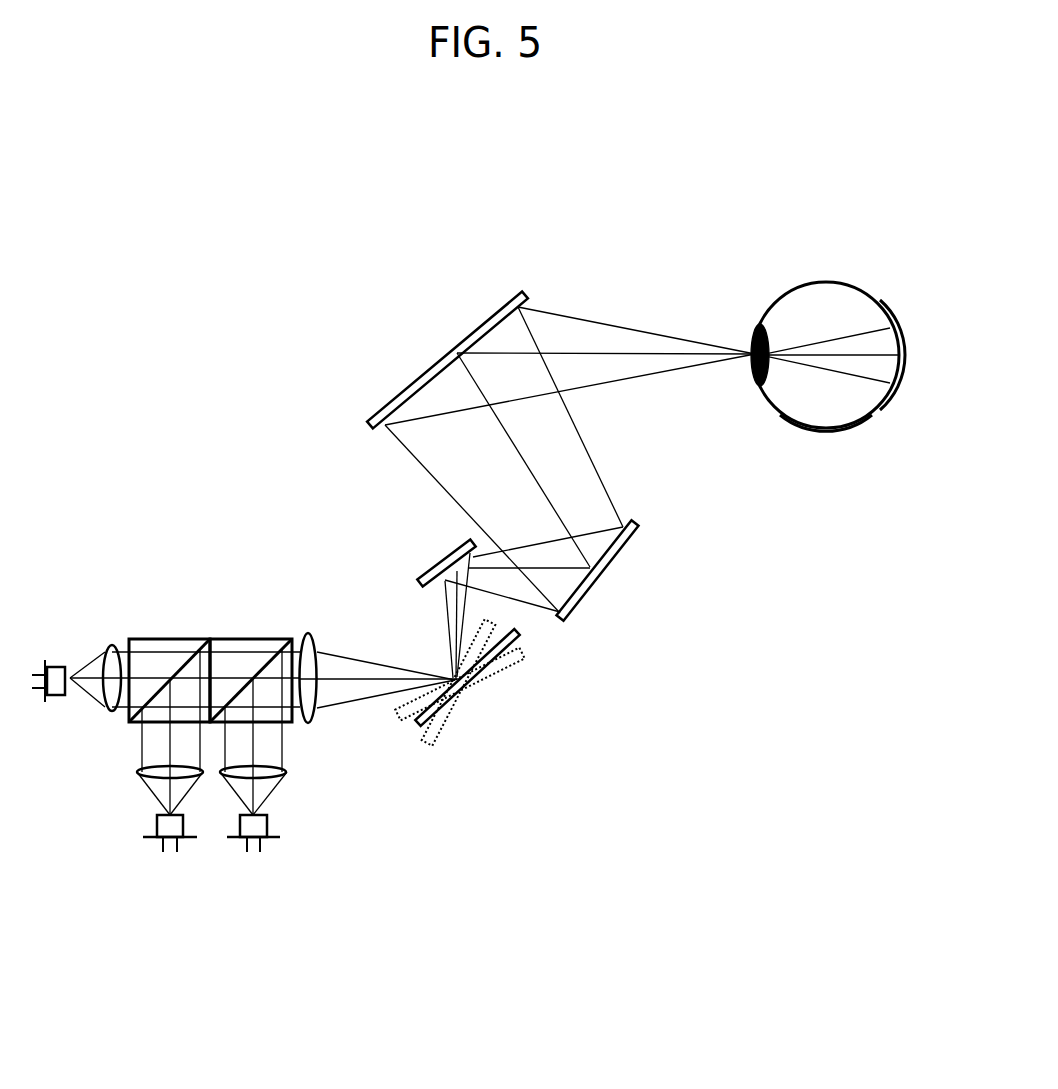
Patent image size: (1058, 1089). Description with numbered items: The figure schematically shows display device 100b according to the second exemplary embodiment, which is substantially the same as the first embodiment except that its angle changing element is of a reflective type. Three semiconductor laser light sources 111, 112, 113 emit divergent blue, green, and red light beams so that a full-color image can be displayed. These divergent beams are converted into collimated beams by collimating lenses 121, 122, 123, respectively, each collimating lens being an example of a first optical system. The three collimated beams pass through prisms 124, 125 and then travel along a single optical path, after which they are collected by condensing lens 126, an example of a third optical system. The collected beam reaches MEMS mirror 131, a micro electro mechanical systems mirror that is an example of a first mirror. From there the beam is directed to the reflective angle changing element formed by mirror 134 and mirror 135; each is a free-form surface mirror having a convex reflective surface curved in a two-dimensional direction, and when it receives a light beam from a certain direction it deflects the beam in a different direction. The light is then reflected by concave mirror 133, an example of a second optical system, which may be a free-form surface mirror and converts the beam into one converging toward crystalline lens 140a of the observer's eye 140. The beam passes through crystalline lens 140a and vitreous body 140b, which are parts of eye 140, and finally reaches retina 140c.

The display device 100b is at (231, 310).
The light source 111 is at (58, 697).
The light source 112 is at (153, 838).
The light source 113 is at (237, 838).
The collimating lens 121 is at (112, 645).
The collimating lens 122 is at (137, 773).
The collimating lens 123 is at (285, 773).
The prism 124 is at (180, 637).
The prism 125 is at (257, 637).
The condensing lens 126 is at (312, 722).
The MEMS mirror 131 is at (417, 729).
The concave mirror 133 is at (388, 407).
The mirror 134 is at (440, 560).
The mirror 135 is at (597, 583).
The eye 140 is at (818, 364).
The crystalline lens 140a is at (755, 378).
The vitreous body 140b is at (826, 418).
The retina 140c is at (893, 380).